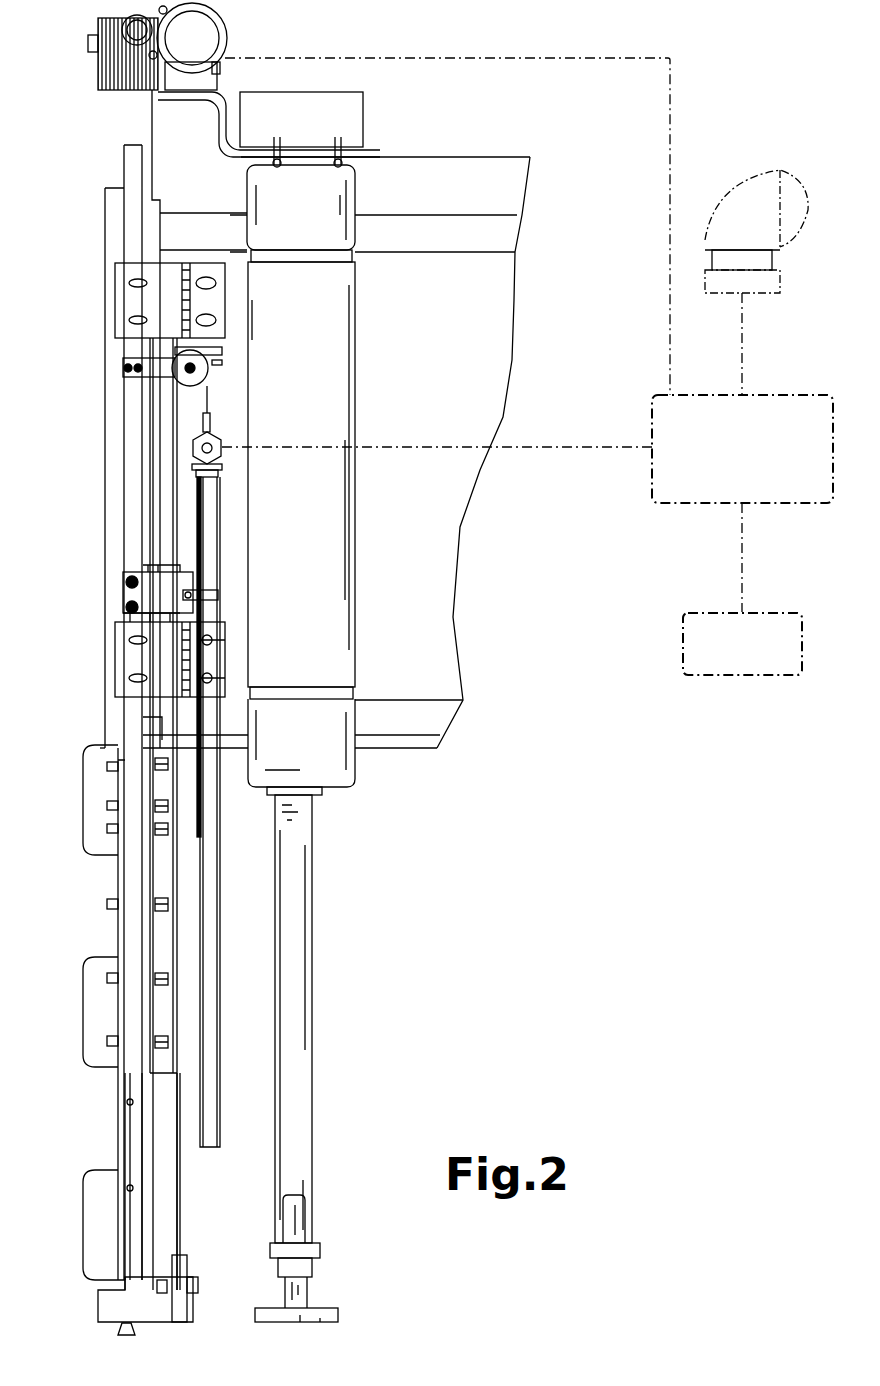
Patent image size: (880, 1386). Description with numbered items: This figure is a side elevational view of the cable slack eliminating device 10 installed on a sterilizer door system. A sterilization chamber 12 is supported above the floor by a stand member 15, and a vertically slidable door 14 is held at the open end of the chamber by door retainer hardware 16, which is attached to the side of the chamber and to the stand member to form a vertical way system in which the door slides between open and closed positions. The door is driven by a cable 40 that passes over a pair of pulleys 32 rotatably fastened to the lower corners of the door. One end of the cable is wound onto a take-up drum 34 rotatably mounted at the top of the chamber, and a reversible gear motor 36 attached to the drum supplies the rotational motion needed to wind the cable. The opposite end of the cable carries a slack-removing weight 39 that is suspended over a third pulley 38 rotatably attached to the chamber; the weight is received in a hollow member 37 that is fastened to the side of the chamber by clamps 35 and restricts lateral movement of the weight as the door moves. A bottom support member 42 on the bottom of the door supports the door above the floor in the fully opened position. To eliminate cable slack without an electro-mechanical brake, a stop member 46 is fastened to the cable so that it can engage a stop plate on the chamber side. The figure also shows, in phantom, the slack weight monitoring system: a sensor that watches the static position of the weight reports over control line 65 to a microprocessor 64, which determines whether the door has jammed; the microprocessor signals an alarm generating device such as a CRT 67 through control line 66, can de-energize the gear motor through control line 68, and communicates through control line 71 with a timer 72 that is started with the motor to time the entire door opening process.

The cable slack eliminating device 10 is at (140, 555).
The sterilization chamber 12 is at (380, 443).
The door 14 is at (93, 812).
The stand member 15 is at (290, 992).
The door retainer hardware 16 is at (135, 1050).
The pulleys 32 is at (193, 1308).
The take-up drum 34 is at (105, 72).
The clamps 35 is at (218, 594).
The reversible gear motor 36 is at (200, 38).
The hollow member 37 is at (208, 1140).
The third pulley 38 is at (200, 368).
The slack-removing weight 39 is at (201, 837).
The cable 40 is at (180, 1228).
The bottom support member 42 is at (130, 1338).
The stop member 46 is at (193, 553).
The microprocessor 64 is at (742, 449).
The control line 65 is at (523, 458).
The control line 66 is at (752, 360).
The CRT 67 is at (756, 231).
The control line 68 is at (672, 172).
The control line 71 is at (745, 570).
The timer 72 is at (742, 644).